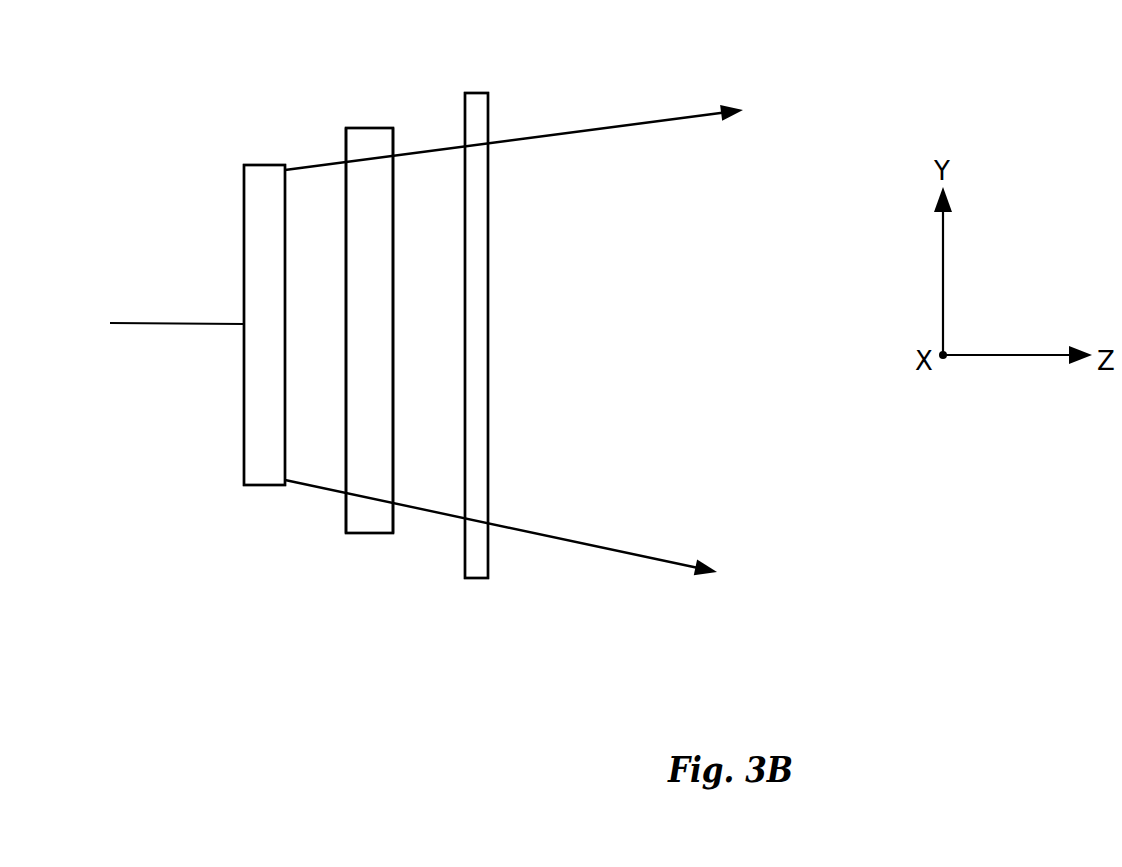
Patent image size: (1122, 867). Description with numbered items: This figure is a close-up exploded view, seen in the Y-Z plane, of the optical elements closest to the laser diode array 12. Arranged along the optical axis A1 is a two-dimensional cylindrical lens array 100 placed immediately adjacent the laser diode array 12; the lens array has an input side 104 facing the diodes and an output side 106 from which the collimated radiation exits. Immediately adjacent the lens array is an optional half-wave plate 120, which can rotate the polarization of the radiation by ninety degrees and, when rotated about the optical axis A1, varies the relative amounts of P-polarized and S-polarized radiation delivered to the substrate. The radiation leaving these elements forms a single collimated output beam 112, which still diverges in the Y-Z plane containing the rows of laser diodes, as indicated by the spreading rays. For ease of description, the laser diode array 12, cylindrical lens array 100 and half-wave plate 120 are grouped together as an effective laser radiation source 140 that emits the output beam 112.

The laser diode array 12 is at (259, 487).
The two-dimensional cylindrical lens array 100 is at (370, 534).
The input side 104 is at (343, 515).
The output side 106 is at (393, 527).
The half-wave plate 120 is at (476, 579).
The effective laser radiation source 140 is at (490, 72).
The collimated output beam 112 is at (575, 542).
The optical axis A1 is at (177, 350).